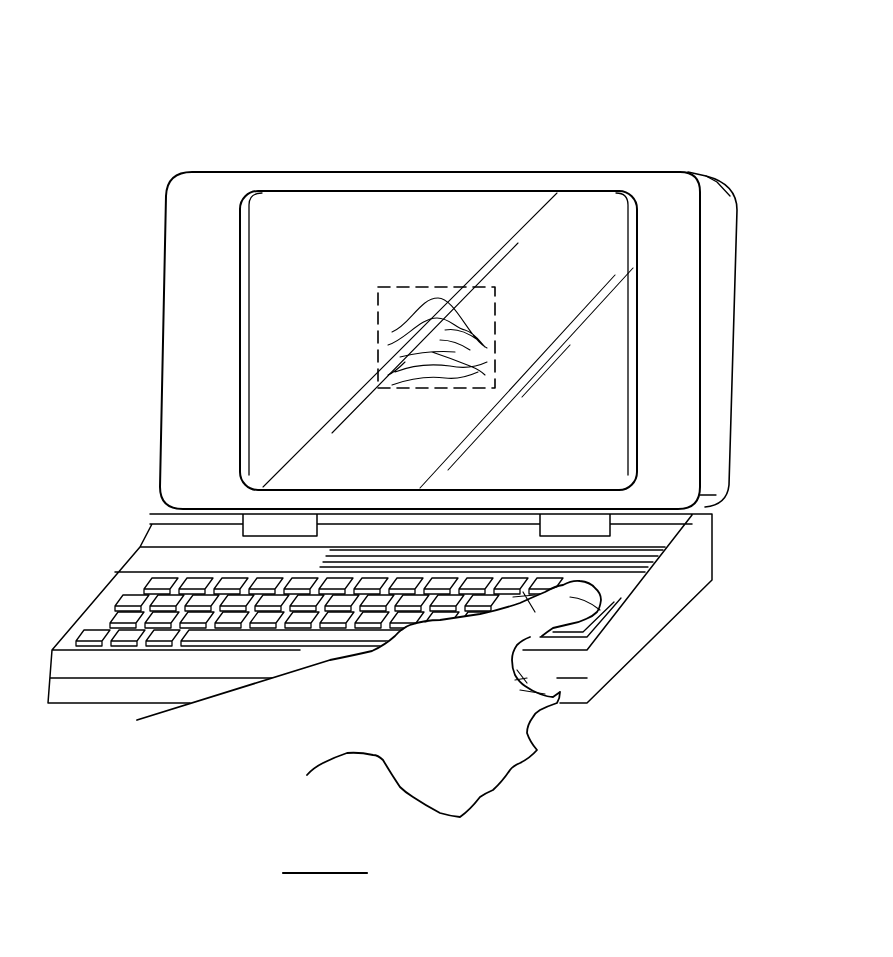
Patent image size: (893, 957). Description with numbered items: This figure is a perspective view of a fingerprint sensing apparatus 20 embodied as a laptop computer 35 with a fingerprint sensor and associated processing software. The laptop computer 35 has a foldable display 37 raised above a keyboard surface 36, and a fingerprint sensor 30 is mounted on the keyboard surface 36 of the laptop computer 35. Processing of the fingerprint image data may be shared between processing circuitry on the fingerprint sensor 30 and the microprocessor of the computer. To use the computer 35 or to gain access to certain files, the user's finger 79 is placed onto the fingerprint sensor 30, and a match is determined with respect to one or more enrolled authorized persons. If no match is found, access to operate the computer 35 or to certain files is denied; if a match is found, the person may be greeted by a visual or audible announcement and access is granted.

The fingerprint sensing apparatus 20 is at (243, 78).
The laptop computer 35 is at (465, 172).
The foldable display 37 is at (273, 343).
The keyboard surface 36 is at (130, 617).
The fingerprint sensor 30 is at (653, 618).
The finger 79 is at (587, 618).